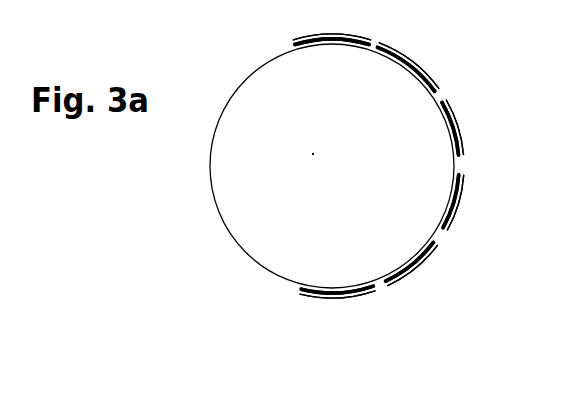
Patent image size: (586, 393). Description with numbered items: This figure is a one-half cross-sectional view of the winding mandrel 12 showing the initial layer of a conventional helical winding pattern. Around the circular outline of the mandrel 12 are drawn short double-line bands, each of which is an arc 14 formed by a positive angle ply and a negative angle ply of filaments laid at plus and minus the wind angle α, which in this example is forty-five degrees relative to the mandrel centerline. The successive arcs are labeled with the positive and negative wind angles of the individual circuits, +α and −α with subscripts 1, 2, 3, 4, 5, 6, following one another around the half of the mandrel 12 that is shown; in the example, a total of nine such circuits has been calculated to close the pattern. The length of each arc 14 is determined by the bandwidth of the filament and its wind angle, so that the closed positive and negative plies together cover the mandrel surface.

The mandrel 12 is at (230, 96).
The arc 14 is at (296, 38).
The angle alpha-1 (±α1) of first arc segment 1 is at (357, 48).
The angle alpha-2 (±α2) of second arc segment 2 is at (424, 68).
The angle alpha-3 (±α3) of third arc segment 3 is at (454, 129).
The angle alpha-4 (±α4) of fourth arc segment 4 is at (458, 203).
The angle alpha-5 (±α5) of fifth arc segment 5 is at (423, 266).
The angle alpha-6 (±α6) of sixth arc segment 6 is at (355, 294).